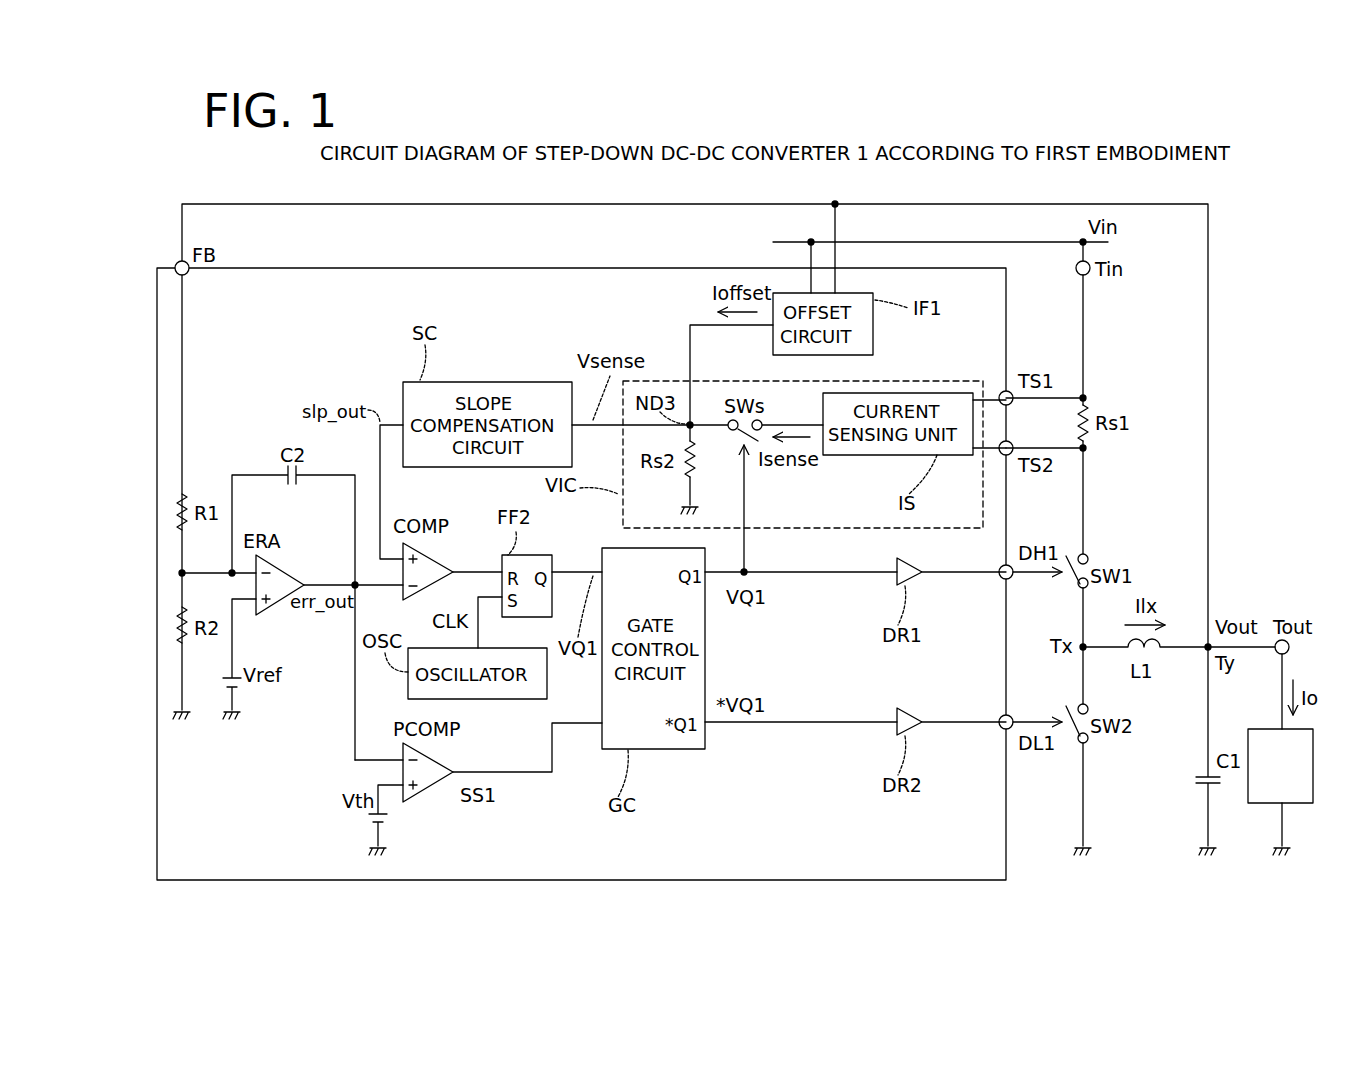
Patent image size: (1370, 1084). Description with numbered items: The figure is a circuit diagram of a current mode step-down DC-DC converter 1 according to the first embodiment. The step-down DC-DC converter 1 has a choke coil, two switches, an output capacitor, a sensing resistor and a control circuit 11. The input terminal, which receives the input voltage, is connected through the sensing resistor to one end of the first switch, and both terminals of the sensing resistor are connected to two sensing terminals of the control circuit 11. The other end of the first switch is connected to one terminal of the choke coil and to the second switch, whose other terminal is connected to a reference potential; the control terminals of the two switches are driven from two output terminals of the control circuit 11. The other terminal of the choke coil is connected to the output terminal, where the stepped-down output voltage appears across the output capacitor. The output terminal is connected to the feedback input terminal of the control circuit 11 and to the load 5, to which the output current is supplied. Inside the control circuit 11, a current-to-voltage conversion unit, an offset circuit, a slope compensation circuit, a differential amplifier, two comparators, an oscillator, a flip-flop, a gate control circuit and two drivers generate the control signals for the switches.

The step-down DC-DC converter 1 is at (1277, 204).
The load 5 is at (1314, 794).
The control circuit 11 is at (840, 880).